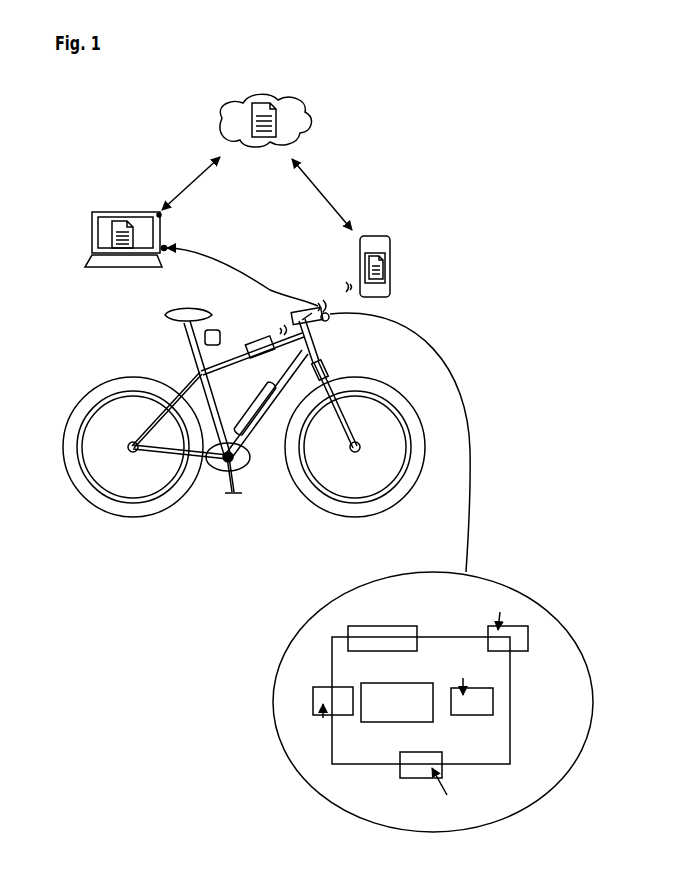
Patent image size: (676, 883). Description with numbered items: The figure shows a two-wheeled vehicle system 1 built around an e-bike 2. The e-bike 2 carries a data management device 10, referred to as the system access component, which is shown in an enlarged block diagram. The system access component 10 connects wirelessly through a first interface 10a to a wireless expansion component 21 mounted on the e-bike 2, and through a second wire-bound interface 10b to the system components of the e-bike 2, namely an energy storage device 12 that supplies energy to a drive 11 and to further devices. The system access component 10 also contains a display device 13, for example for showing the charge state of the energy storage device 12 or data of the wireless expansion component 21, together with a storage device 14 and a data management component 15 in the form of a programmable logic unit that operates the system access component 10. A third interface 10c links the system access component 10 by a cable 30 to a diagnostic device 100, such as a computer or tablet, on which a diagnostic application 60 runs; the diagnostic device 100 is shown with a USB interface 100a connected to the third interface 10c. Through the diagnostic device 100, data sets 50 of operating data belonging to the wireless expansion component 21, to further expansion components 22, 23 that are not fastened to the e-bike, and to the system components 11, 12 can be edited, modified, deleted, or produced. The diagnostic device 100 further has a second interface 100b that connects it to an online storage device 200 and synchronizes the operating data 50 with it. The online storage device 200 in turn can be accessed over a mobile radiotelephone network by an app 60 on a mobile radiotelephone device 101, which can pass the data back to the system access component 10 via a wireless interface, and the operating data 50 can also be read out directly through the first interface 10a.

The two-wheeled vehicle system 1 is at (418, 108).
The e-bike 2 is at (452, 328).
The data management device 10 is at (297, 293).
The first interface 10a is at (312, 705).
The second wire-bound interface 10b is at (420, 770).
The third interface 10c is at (517, 646).
The drive 11 is at (240, 462).
The energy storage device 12 is at (266, 440).
The display device 13 is at (377, 634).
The storage device 14 is at (482, 700).
The data management component 15 is at (383, 690).
The wireless expansion component 21 is at (256, 336).
The expansion component 22 is at (328, 367).
The expansion component 23 is at (204, 337).
The cable 30 is at (263, 292).
The data sets of operating data 50 is at (252, 110).
The diagnostic application 60 is at (95, 242).
The diagnostic device 100 is at (87, 258).
The USB interface 100a is at (164, 244).
The second interface 100b is at (159, 214).
The mobile radiotelephone device 101 is at (392, 249).
The online storage device 200 is at (262, 98).